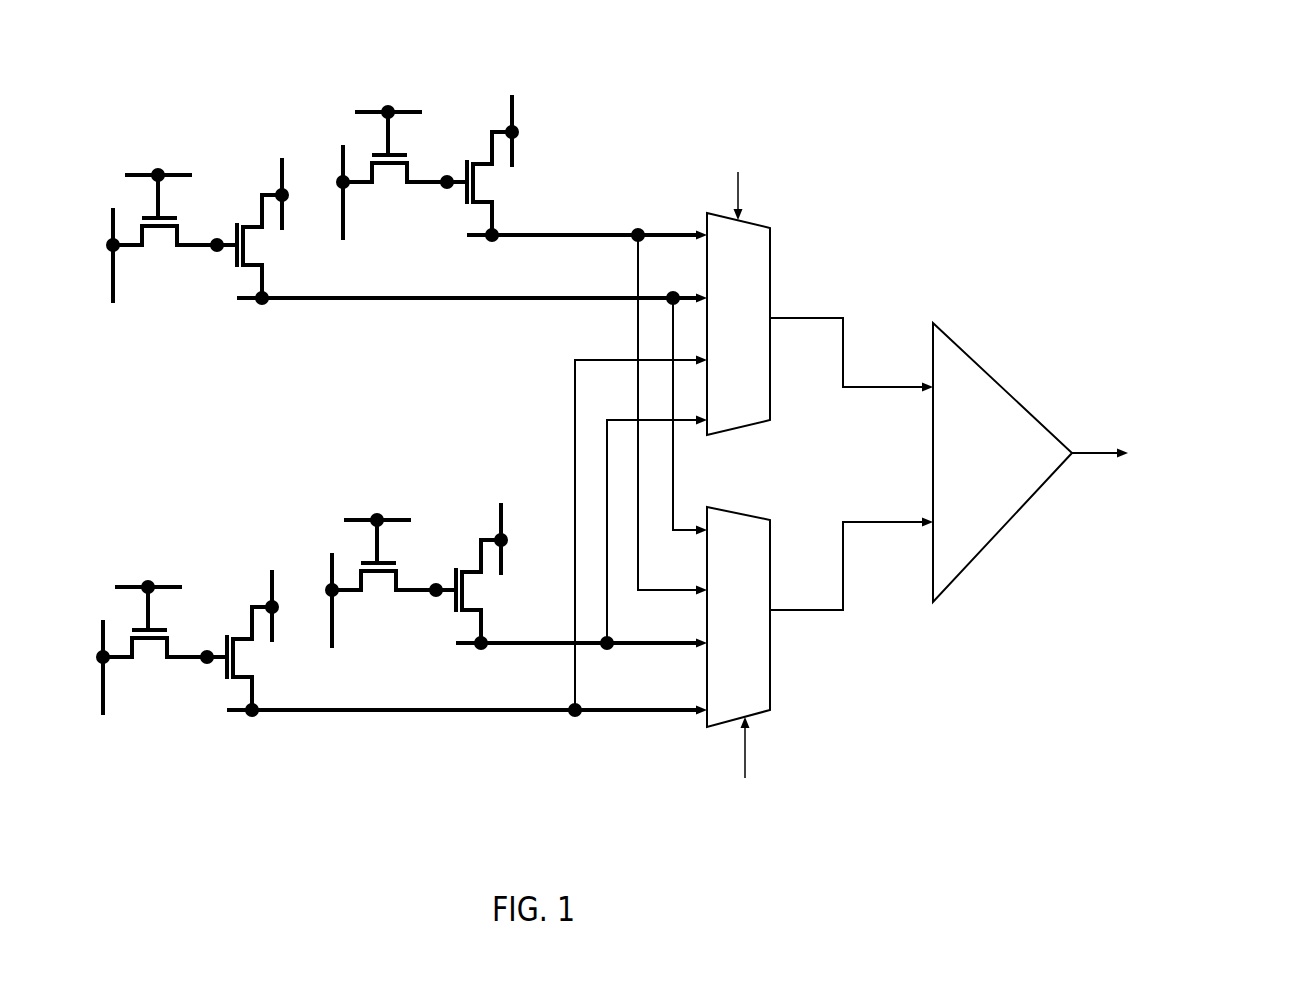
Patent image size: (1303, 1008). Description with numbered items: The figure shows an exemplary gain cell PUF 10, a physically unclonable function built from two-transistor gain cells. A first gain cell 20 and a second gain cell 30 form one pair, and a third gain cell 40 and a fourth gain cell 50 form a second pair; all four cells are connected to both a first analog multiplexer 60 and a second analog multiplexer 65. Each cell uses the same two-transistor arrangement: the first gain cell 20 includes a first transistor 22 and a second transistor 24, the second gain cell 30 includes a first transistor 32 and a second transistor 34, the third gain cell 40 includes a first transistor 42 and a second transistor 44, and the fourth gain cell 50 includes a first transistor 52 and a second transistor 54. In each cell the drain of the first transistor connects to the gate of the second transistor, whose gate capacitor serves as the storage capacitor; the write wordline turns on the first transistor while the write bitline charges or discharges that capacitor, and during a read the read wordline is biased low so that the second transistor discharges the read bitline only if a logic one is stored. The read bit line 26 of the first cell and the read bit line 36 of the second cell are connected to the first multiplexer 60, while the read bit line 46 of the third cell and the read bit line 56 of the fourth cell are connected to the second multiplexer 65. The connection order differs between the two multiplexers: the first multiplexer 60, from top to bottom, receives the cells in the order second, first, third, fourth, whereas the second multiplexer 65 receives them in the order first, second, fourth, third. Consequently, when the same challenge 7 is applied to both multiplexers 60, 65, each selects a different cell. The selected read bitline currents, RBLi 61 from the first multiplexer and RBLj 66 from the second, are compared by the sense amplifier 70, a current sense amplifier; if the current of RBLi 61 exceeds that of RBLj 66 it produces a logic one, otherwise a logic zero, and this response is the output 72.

The gain cell PUF 10 is at (768, 62).
The first gain cell 20 is at (222, 110).
The first transistor 22 is at (183, 272).
The second transistor 24 is at (235, 318).
The read bit line 26 is at (392, 300).
The second gain cell 30 is at (458, 72).
The first transistor 32 is at (422, 203).
The second transistor 34 is at (533, 167).
The read bit line 36 is at (565, 237).
The third gain cell 40 is at (193, 525).
The first transistor 42 is at (140, 688).
The second transistor 44 is at (230, 732).
The read bit line 46 is at (345, 712).
The fourth gain cell 50 is at (467, 453).
The first transistor 52 is at (390, 617).
The second transistor 54 is at (513, 563).
The read bit line 56 is at (587, 643).
The first analog multiplexer 60 is at (832, 200).
The second analog multiplexer 65 is at (773, 498).
The sense amplifier 70 is at (1025, 335).
The challenge 7 is at (730, 475).
The RBLi 61 is at (851, 333).
The RBLj 66 is at (851, 588).
The output 72 is at (1164, 437).